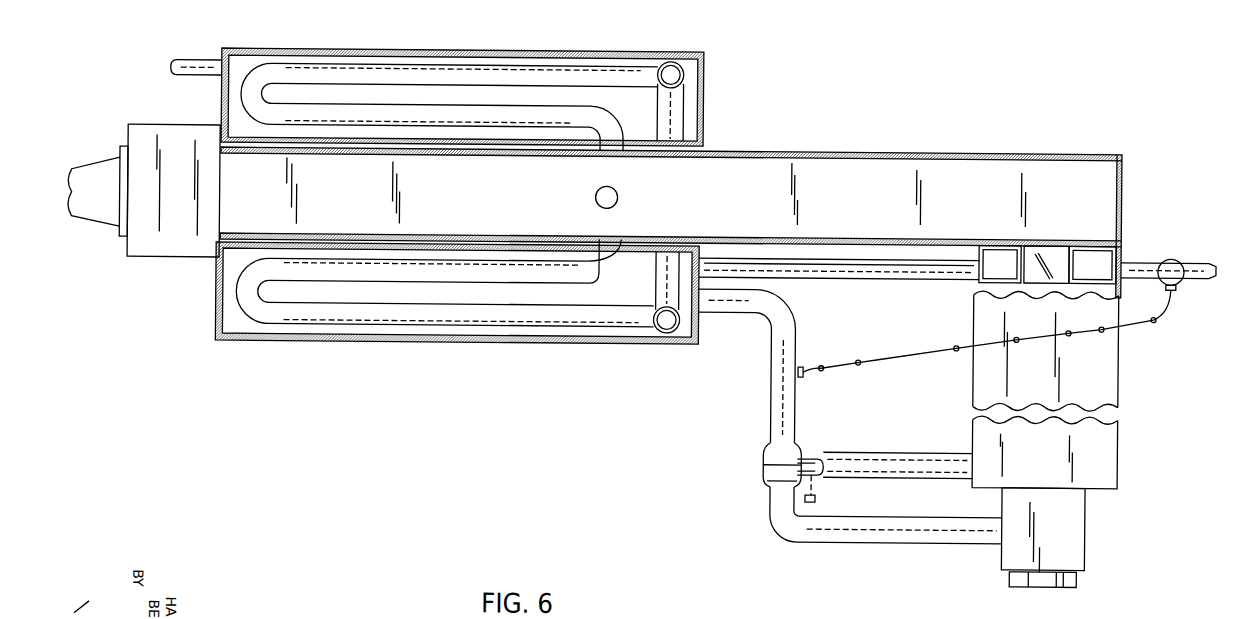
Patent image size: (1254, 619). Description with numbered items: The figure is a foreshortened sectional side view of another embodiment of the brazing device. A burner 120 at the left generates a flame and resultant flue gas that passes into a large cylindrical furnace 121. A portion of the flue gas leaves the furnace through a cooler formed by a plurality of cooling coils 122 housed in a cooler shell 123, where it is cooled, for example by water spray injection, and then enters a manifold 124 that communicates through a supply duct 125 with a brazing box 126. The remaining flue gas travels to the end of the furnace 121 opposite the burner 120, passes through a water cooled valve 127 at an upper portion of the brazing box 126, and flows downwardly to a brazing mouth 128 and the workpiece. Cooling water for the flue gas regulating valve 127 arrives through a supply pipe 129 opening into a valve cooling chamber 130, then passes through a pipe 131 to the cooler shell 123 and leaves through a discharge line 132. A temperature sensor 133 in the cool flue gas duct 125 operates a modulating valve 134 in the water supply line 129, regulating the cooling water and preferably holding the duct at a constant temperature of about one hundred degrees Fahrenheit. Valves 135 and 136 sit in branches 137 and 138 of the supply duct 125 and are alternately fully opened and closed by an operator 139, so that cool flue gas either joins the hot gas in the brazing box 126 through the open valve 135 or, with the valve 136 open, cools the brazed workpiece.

The burner 120 is at (192, 194).
The furnace 121 is at (475, 208).
The cooling coils 122 is at (522, 114).
The cooler shell 123 is at (475, 50).
The manifold 124 is at (657, 124).
The supply duct 125 is at (792, 344).
The brazing box 126 is at (1053, 386).
The water cooled valve 127 is at (1057, 225).
The brazing mouth 128 is at (1053, 581).
The supply pipe 129 is at (1200, 258).
The valve cooling chamber 130 is at (993, 246).
The pipe 131 is at (905, 266).
The discharge line 132 is at (188, 62).
The temperature sensor 133 is at (805, 373).
The modulating valve 134 is at (1166, 254).
The valve 135 is at (807, 452).
The valve 136 is at (772, 477).
The branch 137 is at (908, 455).
The branch 138 is at (908, 517).
The operator 139 is at (818, 493).